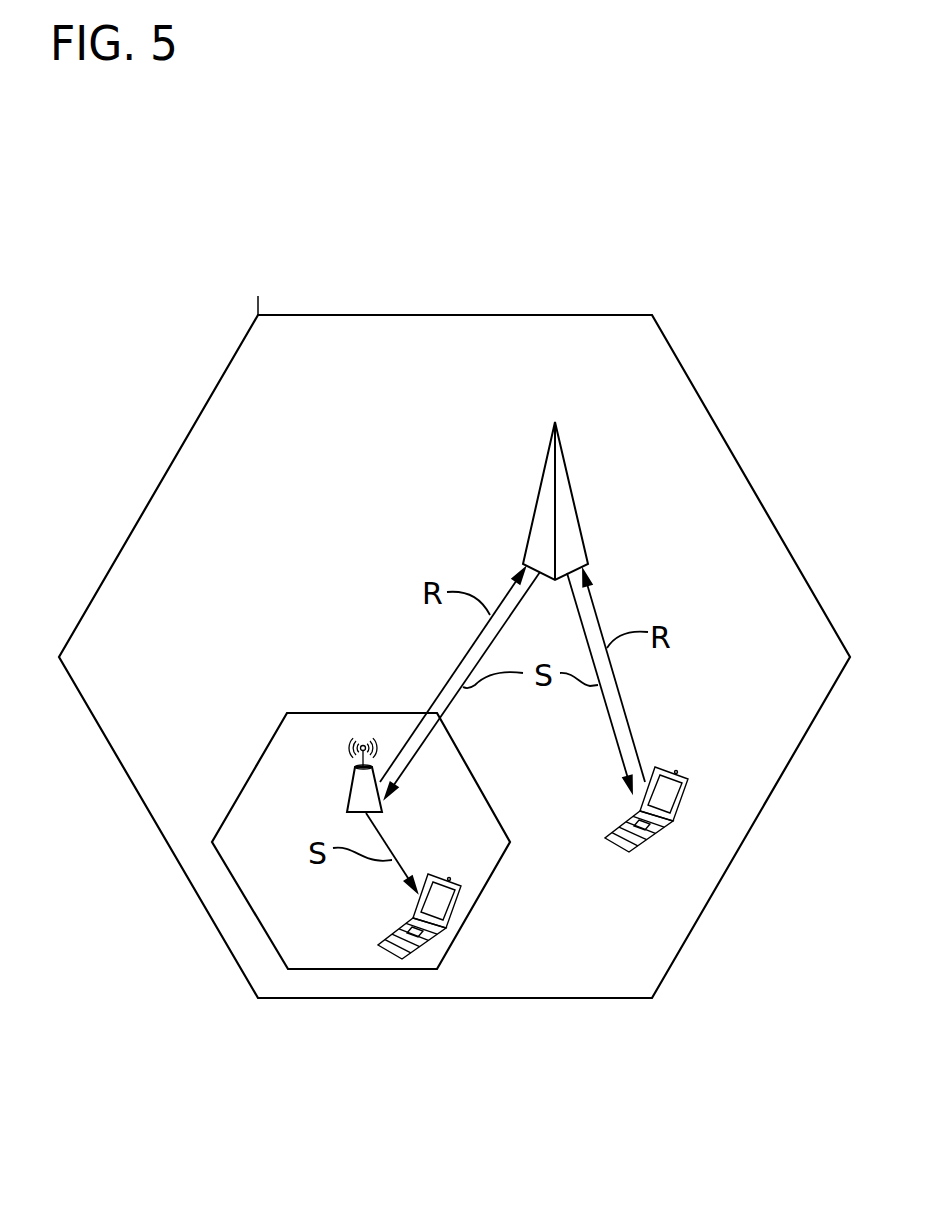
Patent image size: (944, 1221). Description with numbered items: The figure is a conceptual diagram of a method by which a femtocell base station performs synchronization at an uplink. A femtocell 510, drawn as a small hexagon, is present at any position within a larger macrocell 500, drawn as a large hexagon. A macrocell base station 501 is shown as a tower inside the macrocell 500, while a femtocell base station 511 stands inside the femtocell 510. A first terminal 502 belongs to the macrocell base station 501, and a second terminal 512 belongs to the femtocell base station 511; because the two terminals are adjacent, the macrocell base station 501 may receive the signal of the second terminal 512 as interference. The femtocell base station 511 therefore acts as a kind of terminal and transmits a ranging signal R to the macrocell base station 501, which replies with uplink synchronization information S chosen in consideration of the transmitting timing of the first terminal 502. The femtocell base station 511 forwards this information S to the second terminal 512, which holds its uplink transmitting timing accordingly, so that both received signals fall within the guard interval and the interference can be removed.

The macrocell 500 is at (457, 315).
The macrocell base station 501 is at (549, 446).
The terminal 1 502 is at (657, 843).
The femtocell 510 is at (247, 905).
The femtocell base station 511 is at (367, 745).
The terminal 2 512 is at (382, 952).